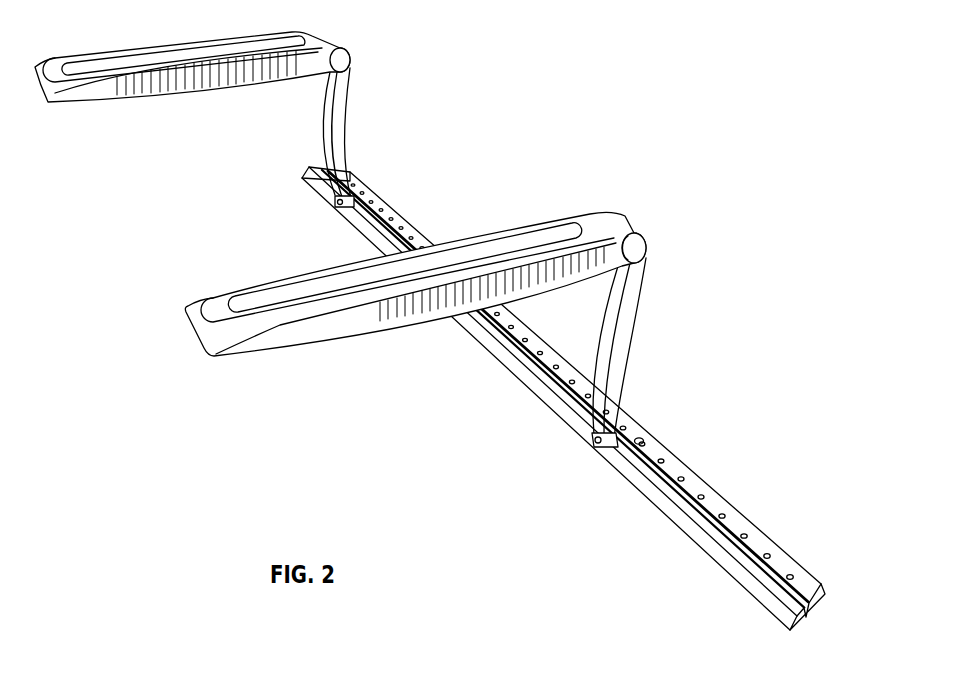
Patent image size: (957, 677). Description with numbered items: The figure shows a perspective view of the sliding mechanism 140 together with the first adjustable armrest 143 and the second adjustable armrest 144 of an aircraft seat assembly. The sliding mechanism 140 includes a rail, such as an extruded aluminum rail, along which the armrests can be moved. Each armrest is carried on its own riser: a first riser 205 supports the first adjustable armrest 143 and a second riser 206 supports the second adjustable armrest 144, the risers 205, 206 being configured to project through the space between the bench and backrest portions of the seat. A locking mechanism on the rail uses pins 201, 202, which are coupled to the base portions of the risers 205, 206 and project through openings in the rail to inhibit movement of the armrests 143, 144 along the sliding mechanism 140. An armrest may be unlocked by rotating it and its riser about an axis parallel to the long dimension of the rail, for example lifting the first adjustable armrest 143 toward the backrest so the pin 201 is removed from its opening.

The sliding mechanism 140 is at (666, 515).
The pin 201 is at (378, 207).
The pin 202 is at (644, 438).
The first riser 205 is at (344, 153).
The second riser 206 is at (626, 345).
The first adjustable armrest 143 is at (103, 53).
The second adjustable armrest 144 is at (256, 286).